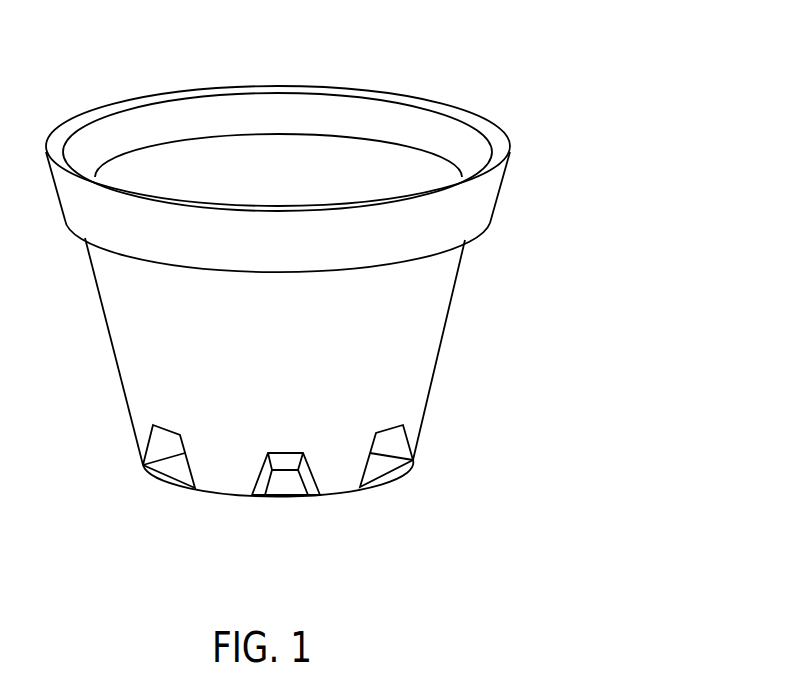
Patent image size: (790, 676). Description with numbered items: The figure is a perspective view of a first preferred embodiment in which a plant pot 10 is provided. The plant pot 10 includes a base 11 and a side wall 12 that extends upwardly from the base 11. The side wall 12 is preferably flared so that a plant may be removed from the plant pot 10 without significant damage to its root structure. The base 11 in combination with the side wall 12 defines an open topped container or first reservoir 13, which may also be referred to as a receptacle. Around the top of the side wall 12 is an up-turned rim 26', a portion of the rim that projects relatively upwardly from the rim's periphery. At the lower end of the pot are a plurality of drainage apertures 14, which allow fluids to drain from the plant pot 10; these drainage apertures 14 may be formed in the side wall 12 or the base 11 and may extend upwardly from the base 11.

The plant pot 10 is at (328, 295).
The base 11 is at (215, 495).
The side wall 12 is at (447, 332).
The first reservoir 13 is at (310, 63).
The drainage apertures 14 is at (141, 474).
The up-turned rim 26' is at (328, 179).